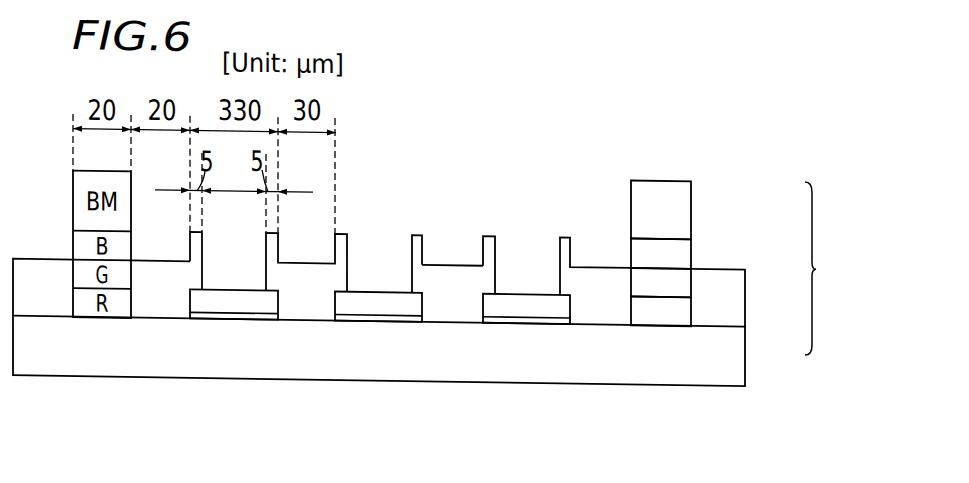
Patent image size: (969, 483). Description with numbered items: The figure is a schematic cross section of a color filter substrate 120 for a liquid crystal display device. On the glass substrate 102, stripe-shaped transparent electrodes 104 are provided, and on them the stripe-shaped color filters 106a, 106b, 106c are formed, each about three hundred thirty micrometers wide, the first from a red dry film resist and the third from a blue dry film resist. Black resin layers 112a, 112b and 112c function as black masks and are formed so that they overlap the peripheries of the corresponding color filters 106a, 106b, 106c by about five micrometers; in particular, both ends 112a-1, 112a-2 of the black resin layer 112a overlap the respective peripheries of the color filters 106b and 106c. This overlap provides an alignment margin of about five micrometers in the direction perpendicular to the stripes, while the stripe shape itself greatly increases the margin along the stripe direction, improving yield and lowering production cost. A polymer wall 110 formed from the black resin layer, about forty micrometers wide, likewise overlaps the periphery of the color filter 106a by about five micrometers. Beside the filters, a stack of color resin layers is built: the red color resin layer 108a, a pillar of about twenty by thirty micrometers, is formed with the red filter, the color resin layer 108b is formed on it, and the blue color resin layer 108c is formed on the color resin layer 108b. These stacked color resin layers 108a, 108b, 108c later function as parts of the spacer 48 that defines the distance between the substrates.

The spacer 48 is at (632, 316).
The glass substrate 102 is at (718, 344).
The transparent electrodes 104 is at (205, 311).
The color filter 106a is at (257, 306).
The color filter 106b is at (360, 304).
The color filter 106c is at (505, 304).
The color resin layer 108a is at (632, 312).
The color resin layer 108b is at (667, 280).
The color resin layer 108c is at (688, 258).
The polymer wall 110 is at (305, 308).
The black resin layer 112a is at (465, 257).
The end of black resin layer 112a-1 is at (414, 251).
The end of black resin layer 112a-2 is at (493, 250).
The black resin layer 112b is at (602, 261).
The black resin layer 112c is at (685, 194).
The color filter substrate 120 is at (830, 269).